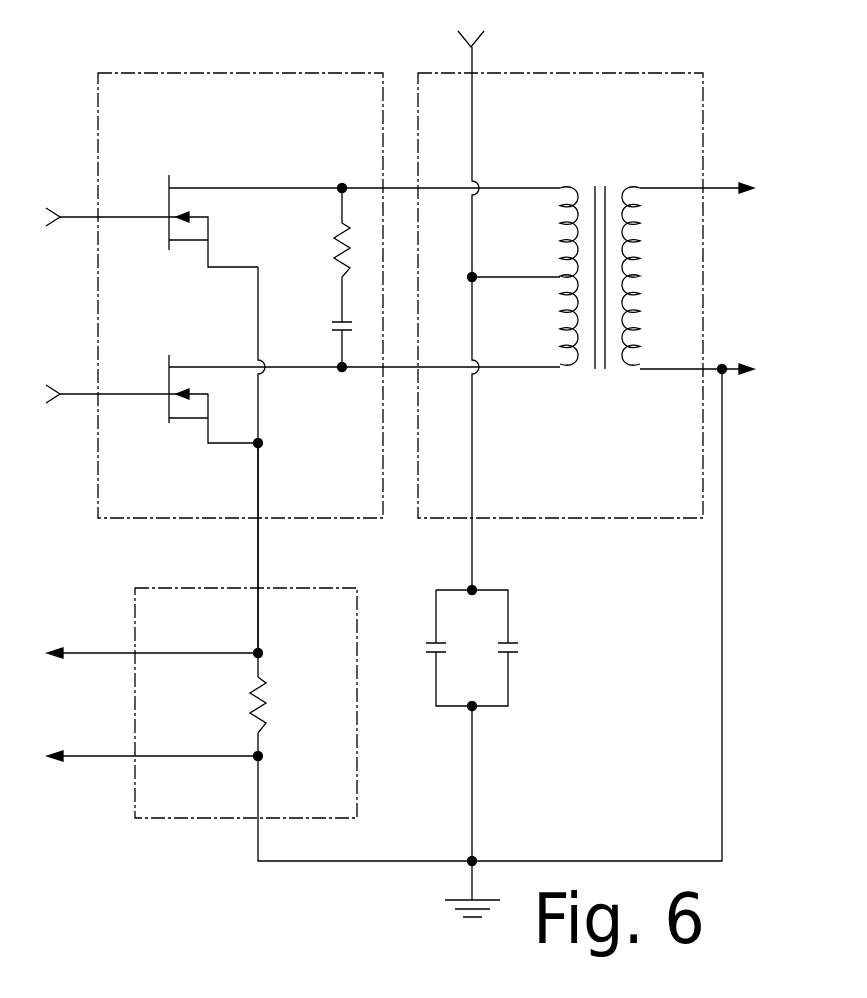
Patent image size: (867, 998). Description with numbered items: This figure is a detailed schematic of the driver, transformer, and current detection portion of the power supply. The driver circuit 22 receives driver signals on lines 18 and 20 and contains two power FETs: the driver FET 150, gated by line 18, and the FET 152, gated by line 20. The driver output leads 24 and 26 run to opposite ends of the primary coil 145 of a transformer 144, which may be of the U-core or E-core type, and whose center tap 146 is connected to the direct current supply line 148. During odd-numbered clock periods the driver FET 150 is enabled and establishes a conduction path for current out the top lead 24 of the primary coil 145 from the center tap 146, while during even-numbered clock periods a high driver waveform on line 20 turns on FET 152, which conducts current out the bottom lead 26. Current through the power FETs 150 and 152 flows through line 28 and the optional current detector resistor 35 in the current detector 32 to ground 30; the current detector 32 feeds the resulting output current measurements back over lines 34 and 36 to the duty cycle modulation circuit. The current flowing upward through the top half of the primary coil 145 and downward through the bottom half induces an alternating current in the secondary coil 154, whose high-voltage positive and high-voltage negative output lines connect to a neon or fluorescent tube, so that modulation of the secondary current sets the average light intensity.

The driver signal line 18 is at (84, 219).
The driver signal line 20 is at (86, 396).
The driver circuit 22 is at (158, 321).
The driver power current lead 24 is at (403, 188).
The driver power current lead 26 is at (403, 367).
The driver lead 28 is at (258, 553).
The ground 30 is at (472, 887).
The current detector 32 is at (210, 640).
The feedback line 34 is at (143, 770).
The current detector resistor 35 is at (257, 718).
The feedback line 36 is at (142, 667).
The transformer 144 is at (600, 456).
The primary coil 145 is at (561, 242).
The center tap 146 is at (514, 266).
The direct current supply line 148 is at (470, 53).
The driver FET 150 is at (206, 227).
The FET 152 is at (208, 406).
The secondary coil 154 is at (648, 358).